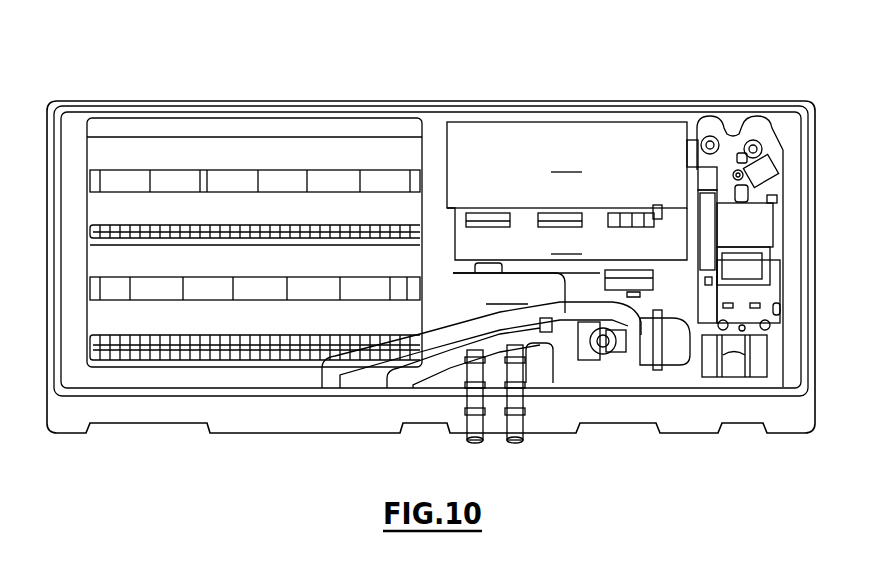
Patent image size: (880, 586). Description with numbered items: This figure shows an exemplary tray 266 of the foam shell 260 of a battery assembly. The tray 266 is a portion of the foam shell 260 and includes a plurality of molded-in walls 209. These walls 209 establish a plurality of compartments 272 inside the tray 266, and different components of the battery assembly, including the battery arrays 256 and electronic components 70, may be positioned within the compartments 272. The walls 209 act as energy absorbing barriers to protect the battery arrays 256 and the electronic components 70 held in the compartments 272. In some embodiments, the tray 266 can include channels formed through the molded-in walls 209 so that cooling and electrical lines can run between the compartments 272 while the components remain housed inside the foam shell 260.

The foam shell 260 is at (688, 78).
The tray 266 is at (504, 96).
The compartments 272 is at (597, 112).
The electronics module 70 is at (762, 236).
The molded-in walls 209 is at (733, 130).
The battery arrays 256 is at (203, 272).